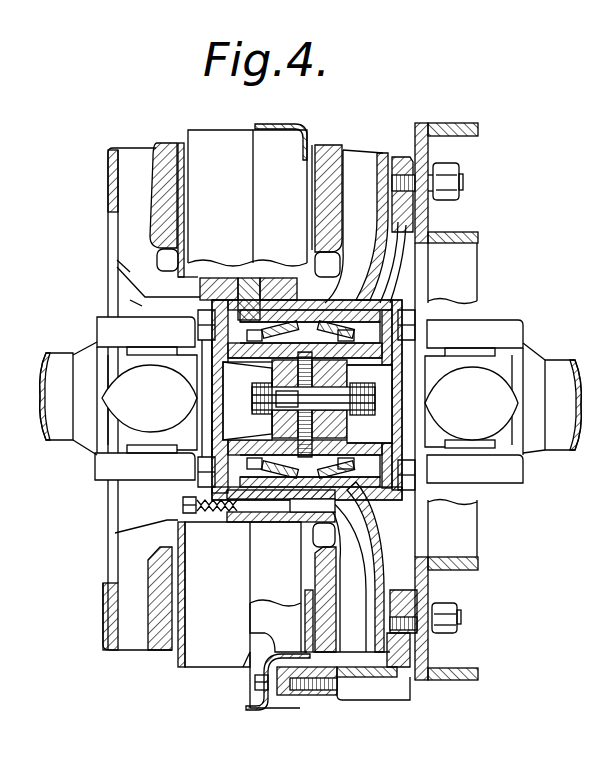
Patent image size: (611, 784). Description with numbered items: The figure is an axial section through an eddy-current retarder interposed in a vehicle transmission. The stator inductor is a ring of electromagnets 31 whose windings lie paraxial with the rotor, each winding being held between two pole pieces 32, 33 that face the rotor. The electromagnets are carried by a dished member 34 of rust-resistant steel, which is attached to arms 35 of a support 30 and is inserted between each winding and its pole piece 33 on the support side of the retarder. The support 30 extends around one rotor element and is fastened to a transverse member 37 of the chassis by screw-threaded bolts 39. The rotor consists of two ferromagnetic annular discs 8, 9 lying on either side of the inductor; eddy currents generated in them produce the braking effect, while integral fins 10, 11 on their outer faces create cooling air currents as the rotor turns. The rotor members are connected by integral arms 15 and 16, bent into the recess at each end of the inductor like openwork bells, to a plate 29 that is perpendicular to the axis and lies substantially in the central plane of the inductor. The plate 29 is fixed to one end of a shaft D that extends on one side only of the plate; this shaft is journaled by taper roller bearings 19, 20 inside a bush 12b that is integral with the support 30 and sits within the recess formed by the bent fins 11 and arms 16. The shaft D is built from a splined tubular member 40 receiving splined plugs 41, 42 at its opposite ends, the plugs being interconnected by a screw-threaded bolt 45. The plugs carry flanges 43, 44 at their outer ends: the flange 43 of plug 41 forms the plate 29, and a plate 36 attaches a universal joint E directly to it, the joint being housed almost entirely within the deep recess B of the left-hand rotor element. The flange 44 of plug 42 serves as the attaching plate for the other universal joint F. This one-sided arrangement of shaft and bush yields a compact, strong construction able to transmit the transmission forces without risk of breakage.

The annular disc 8 is at (156, 146).
The annular disc 9 is at (327, 175).
The fins 10 is at (140, 228).
The fins 11 is at (358, 177).
The bush 12b is at (345, 303).
The arms 15 is at (173, 286).
The arms 16 is at (330, 272).
The taper roller bearing 19 is at (253, 510).
The taper roller bearing 20 is at (300, 507).
The plate 29 is at (247, 283).
The support 30 is at (400, 222).
The electromagnets 31 is at (214, 150).
The pole piece 32 is at (182, 143).
The pole piece 33 is at (302, 142).
The dished member 34 is at (250, 708).
The arms 35 is at (357, 685).
The plate 36 is at (218, 468).
The transverse member 37 is at (463, 128).
The screw-threaded bolts 39 is at (420, 182).
The tubular member 40 is at (393, 463).
The plug 41 is at (282, 396).
The plug 42 is at (348, 382).
The flange 43 is at (233, 336).
The flange 44 is at (392, 335).
The screw-threaded bolt 45 is at (312, 405).
The recess B is at (137, 307).
The shaft D is at (347, 420).
The universal joint E is at (160, 414).
The universal joint F is at (480, 422).